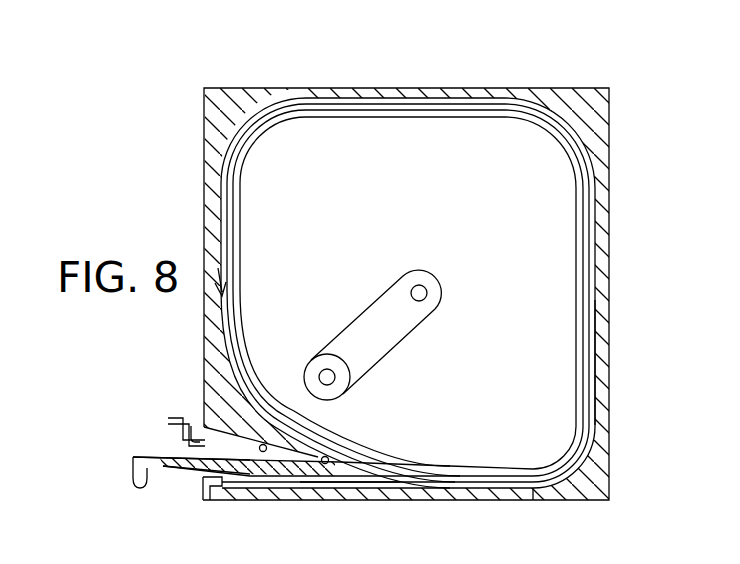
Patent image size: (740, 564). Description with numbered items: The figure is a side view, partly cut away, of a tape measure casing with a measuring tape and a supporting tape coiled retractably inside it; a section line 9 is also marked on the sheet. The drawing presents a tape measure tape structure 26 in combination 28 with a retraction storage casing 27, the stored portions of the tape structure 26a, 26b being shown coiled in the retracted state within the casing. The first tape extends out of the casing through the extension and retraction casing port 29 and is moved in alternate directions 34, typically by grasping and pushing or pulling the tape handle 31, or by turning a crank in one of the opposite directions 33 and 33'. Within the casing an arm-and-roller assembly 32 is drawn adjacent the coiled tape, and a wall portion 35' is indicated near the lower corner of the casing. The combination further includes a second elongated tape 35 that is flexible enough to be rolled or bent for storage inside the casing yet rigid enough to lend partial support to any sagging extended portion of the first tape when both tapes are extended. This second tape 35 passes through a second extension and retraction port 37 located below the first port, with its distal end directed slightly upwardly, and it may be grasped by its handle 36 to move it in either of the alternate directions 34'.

The section line 9- 9 is at (200, 40).
The tape measure tape structure 26 is at (187, 428).
The tape measure tape structure portion 26a is at (328, 459).
The tape measure tape structure portion 26b is at (298, 489).
The retraction storage casing 27 is at (600, 473).
The combination 28 is at (628, 382).
The extension and retraction casing port 29 is at (266, 447).
The tape handle 31 is at (168, 424).
The roller arm 32 is at (387, 310).
The direction 33 is at (304, 306).
The direction 33' is at (420, 374).
The alternate directions 34 is at (134, 382).
The alternate directions 34' is at (98, 458).
The second elongated tape 35 is at (221, 505).
The wall portion 35' is at (557, 508).
The handle 36 is at (133, 478).
The extension and retraction port 37 is at (205, 478).